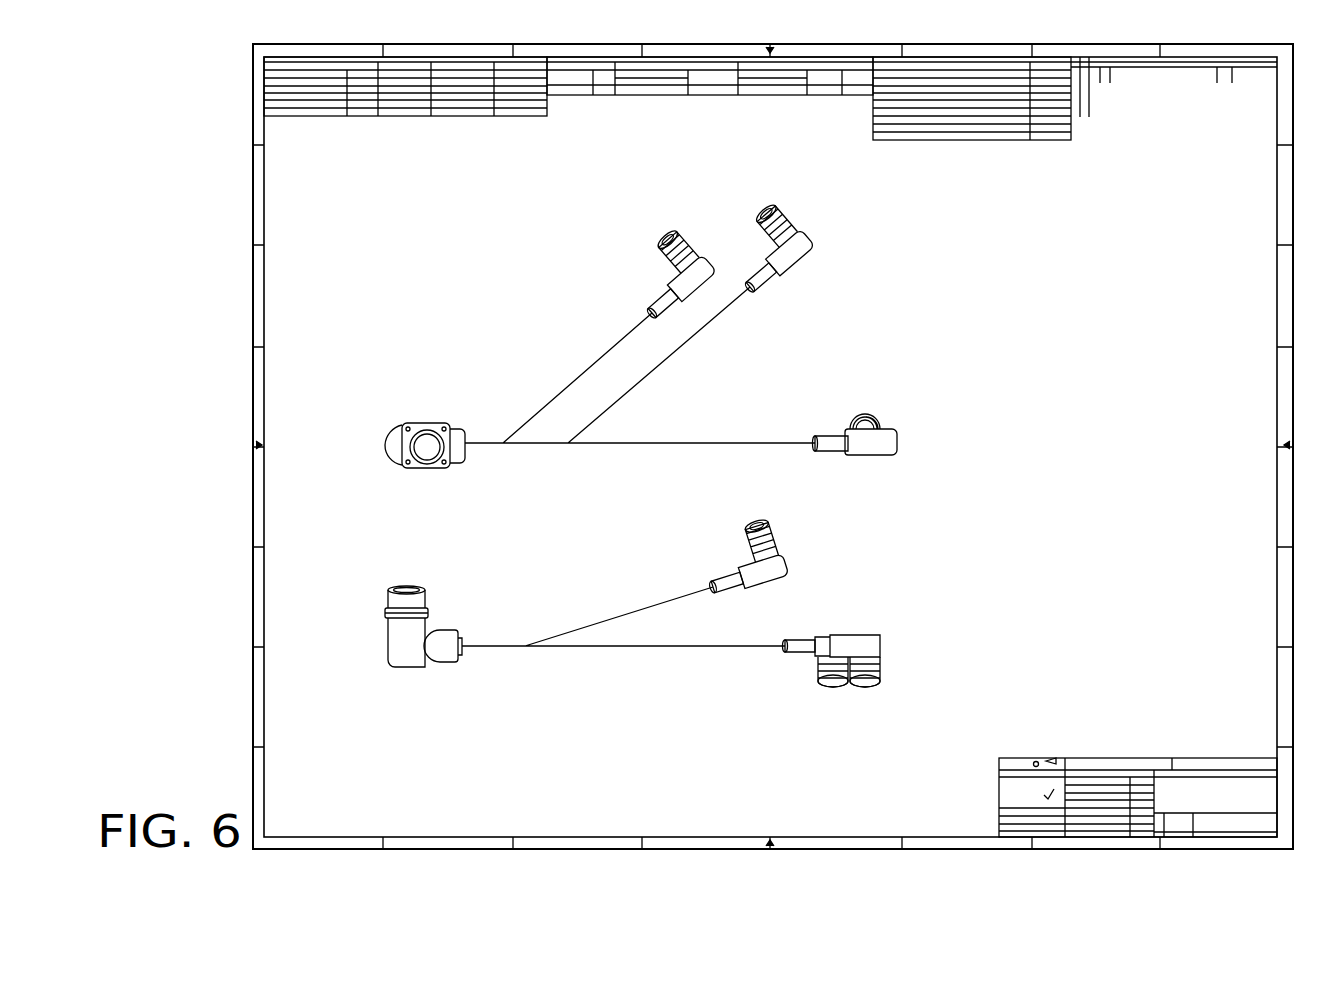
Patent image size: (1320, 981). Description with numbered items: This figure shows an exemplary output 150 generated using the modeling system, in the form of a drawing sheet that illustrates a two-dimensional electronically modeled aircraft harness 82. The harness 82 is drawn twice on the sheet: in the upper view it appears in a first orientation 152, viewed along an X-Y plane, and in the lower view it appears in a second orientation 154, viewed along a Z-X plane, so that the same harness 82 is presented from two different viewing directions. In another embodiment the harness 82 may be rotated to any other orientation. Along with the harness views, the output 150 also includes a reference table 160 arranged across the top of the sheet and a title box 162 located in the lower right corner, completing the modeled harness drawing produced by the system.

The output 150 is at (222, 168).
The reference table 160 is at (667, 125).
The title box 162 is at (1122, 745).
The aircraft harness 82 is at (878, 302).
The first orientation 152 is at (380, 406).
The second orientation 154 is at (360, 596).